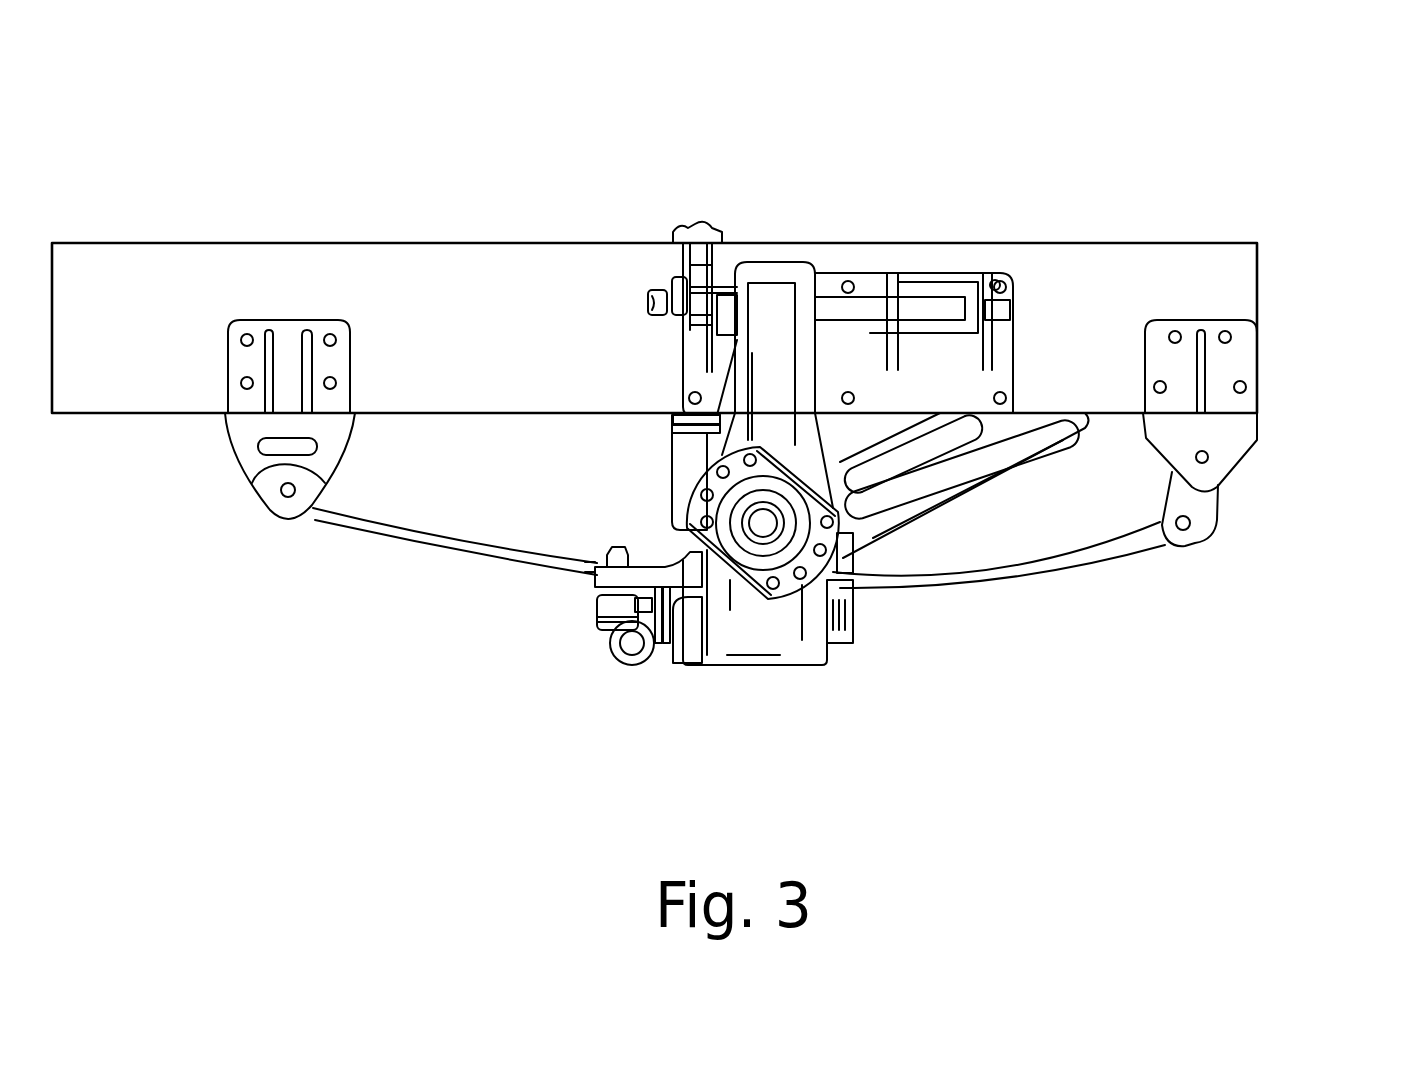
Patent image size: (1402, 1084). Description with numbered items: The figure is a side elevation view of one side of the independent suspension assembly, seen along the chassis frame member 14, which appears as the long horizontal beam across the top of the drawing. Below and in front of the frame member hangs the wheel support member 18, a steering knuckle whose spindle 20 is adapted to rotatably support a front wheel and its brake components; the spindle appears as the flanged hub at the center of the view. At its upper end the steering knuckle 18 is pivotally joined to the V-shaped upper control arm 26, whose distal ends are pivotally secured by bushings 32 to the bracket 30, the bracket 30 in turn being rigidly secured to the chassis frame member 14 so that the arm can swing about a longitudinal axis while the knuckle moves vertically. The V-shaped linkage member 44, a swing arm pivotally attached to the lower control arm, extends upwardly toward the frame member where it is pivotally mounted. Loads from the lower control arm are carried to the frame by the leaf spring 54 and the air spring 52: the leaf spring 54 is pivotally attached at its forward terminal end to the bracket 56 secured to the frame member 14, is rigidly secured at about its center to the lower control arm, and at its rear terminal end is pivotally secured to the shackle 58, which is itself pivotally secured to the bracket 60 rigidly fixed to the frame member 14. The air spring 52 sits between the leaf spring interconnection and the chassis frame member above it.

The chassis frame member 14 is at (440, 273).
The wheel support member 18 is at (770, 618).
The spindle 20 is at (762, 528).
The upper control arm 26 is at (868, 300).
The bracket 30 is at (1002, 353).
The bushing 32 is at (937, 294).
The V-shaped linkage member 44 is at (953, 477).
The air spring 52 is at (680, 470).
The leaf spring 54 is at (980, 573).
The bracket 56 is at (240, 438).
The shackle 58 is at (1200, 498).
The bracket 60 is at (1233, 430).